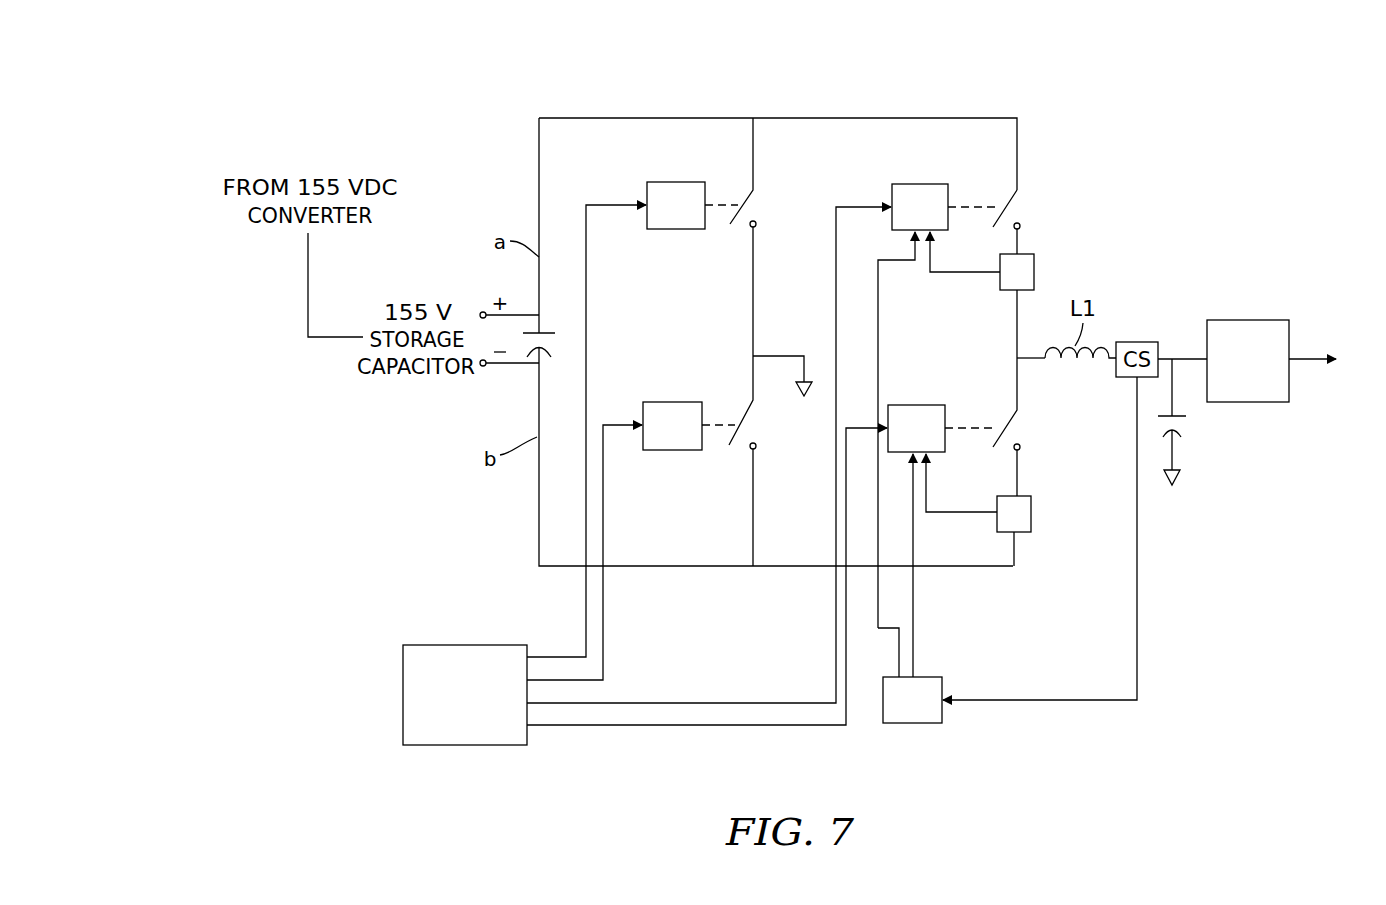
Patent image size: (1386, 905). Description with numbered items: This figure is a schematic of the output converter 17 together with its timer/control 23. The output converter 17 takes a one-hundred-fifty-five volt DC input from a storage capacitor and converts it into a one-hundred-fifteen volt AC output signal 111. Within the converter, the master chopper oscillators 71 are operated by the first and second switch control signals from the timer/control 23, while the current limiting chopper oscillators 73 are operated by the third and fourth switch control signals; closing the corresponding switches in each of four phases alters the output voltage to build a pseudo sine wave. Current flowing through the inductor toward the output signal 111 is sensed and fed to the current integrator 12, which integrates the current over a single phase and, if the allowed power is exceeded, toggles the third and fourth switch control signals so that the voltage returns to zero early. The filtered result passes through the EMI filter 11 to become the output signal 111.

The output converter 17 is at (683, 88).
The master chopper oscillators 71 is at (683, 181).
The current limiting chopper oscillator 73 is at (932, 184).
The EMI filter 11 is at (1272, 320).
The output signal 111 is at (1334, 360).
The current integrator 12 is at (898, 724).
The timer/control 23 is at (450, 746).